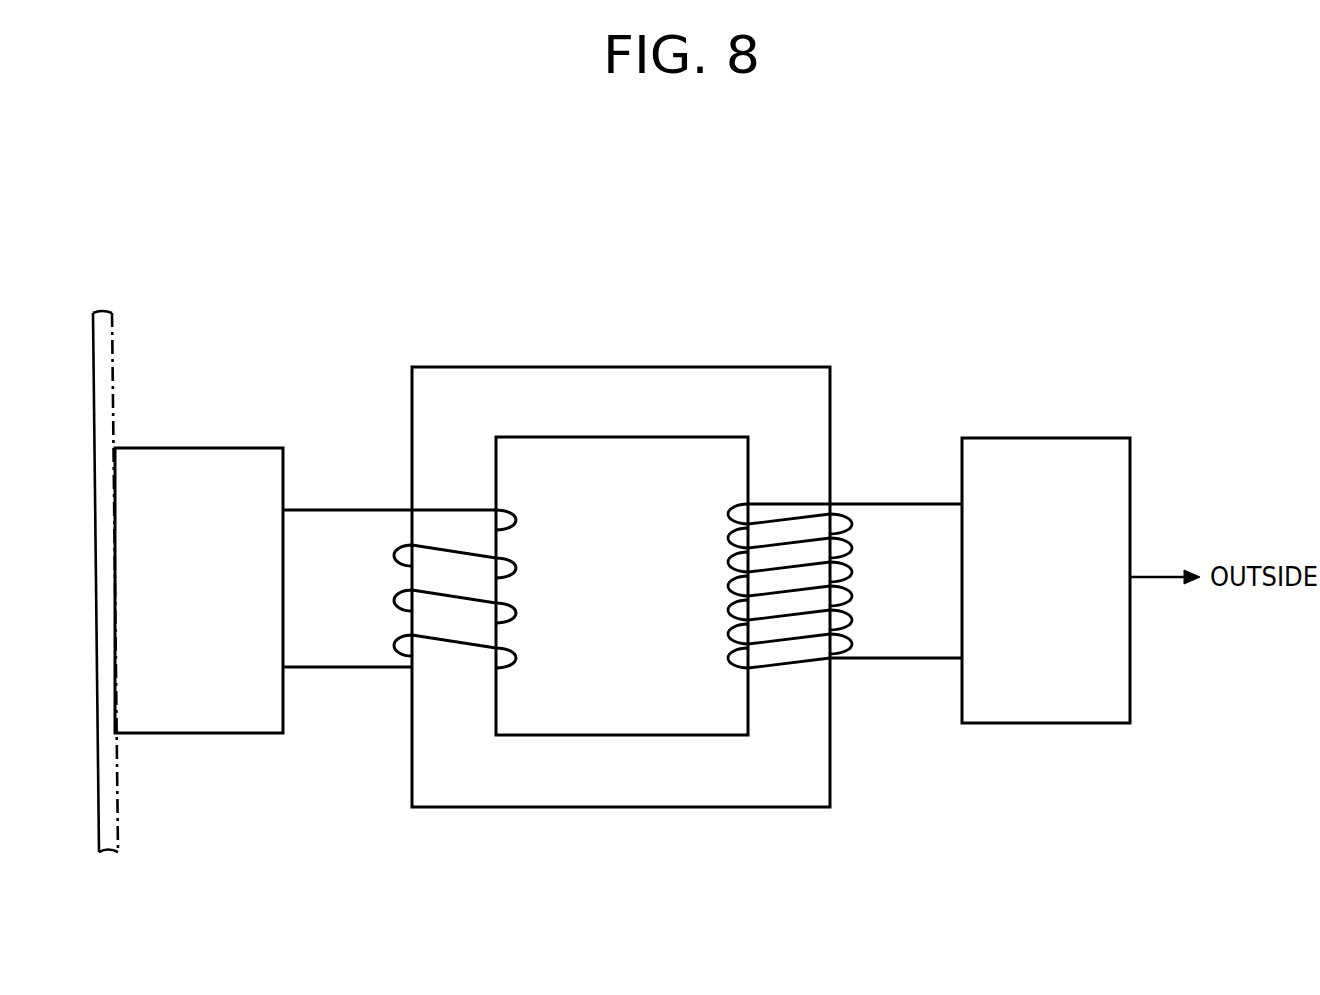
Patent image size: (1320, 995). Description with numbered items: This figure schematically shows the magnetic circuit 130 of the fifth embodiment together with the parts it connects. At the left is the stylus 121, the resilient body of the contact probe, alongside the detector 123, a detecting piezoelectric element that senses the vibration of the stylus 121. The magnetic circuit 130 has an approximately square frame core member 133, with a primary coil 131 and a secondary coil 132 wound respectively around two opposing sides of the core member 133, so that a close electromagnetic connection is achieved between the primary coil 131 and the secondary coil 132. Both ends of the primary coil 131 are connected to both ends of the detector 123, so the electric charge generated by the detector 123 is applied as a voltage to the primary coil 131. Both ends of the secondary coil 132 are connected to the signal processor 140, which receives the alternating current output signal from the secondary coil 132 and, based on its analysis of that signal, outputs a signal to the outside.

The stylus 121 is at (118, 800).
The detector 123 is at (197, 448).
The magnetic circuit 130 is at (622, 498).
The primary coil 131 is at (512, 556).
The secondary coil 132 is at (737, 617).
The core member 133 is at (610, 380).
The signal processor 140 is at (1045, 438).